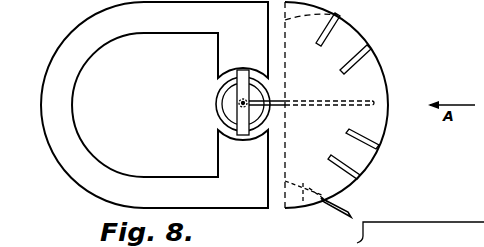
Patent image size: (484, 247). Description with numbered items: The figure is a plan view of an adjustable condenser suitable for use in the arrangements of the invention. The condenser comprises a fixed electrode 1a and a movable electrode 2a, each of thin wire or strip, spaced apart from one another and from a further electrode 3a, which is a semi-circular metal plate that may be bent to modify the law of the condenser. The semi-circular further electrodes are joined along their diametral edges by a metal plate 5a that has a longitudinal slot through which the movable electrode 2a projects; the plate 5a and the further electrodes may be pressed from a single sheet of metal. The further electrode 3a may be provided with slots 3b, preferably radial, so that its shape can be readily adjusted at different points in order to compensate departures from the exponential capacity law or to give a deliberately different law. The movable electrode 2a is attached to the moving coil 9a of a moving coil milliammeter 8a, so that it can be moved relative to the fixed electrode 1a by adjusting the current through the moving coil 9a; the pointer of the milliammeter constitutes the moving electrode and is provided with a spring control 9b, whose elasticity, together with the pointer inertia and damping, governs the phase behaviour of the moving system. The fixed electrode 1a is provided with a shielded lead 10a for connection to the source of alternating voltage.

The moving coil milliammeter 8a is at (164, 22).
The moving coil 9a is at (245, 121).
The spring control 9b is at (223, 108).
The movable electrode 2a is at (365, 100).
The metal plate 5a is at (341, 14).
The further electrode 3a is at (360, 48).
The slots 3b is at (328, 45).
The shielded lead 10a is at (345, 203).
The fixed electrode 1a is at (302, 207).